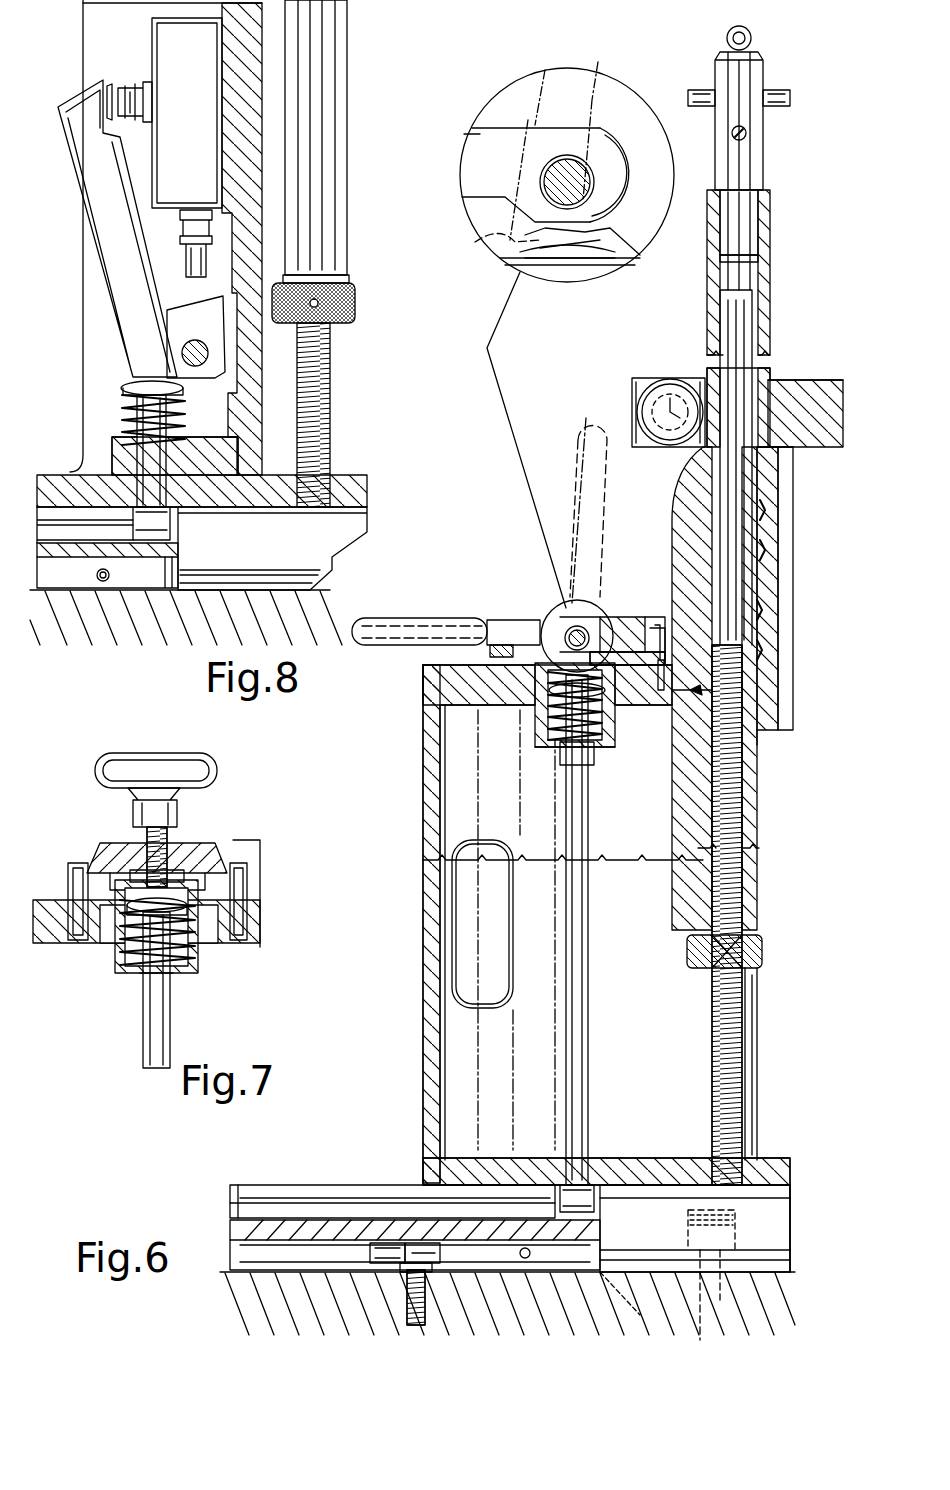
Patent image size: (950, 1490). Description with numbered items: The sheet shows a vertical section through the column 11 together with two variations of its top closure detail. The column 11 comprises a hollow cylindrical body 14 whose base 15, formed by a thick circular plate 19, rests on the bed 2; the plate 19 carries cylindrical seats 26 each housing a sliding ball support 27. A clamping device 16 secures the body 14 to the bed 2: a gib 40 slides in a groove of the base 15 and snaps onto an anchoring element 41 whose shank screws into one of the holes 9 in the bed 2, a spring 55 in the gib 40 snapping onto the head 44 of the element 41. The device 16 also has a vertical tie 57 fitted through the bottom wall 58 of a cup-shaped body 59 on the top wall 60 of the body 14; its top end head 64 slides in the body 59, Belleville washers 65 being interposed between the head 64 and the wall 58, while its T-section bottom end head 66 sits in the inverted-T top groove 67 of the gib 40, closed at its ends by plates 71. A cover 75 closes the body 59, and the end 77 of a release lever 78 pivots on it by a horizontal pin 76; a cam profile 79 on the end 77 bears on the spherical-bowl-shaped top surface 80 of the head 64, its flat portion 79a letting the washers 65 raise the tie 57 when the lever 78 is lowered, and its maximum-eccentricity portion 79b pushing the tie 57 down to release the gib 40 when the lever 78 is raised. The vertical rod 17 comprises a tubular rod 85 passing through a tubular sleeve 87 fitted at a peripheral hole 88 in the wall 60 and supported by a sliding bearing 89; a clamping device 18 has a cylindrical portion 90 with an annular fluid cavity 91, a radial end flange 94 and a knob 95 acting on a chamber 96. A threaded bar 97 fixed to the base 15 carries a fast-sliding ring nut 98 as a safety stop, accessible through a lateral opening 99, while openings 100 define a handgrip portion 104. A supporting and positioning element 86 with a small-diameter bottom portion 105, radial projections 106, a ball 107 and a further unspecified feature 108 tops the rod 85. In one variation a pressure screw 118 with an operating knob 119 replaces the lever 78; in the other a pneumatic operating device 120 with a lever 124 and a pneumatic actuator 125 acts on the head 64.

In FIG. 6, the bed 2 is at (765, 1310).
In FIG. 6, the holes 9 is at (416, 1325).
In FIG. 6, the column 11 is at (492, 568).
In FIG. 6, the hollow cylindrical body 14 is at (415, 915).
In FIG. 8, the base 15 is at (375, 500).
In FIG. 6, the base 15 is at (800, 1205).
In FIG. 6, the clamping device 16 is at (610, 1300).
In FIG. 6, the vertical rod 17 is at (790, 282).
In FIG. 6, the clamping device (radially-expanding bush) 18 is at (830, 378).
In FIG. 6, the circular plate 19 is at (470, 1168).
In FIG. 6, the cylindrical seats 26 is at (714, 1275).
In FIG. 6, the ball support 27 is at (700, 1238).
In FIG. 8, the gib 40 is at (70, 590).
In FIG. 6, the gib 40 is at (235, 1238).
In FIG. 6, the anchoring element 41 is at (428, 1292).
In FIG. 6, the head 44 is at (413, 1240).
In FIG. 6, the spring 55 is at (395, 1240).
In FIG. 8, the vertical tie 57 is at (150, 462).
In FIG. 7, the vertical tie 57 is at (152, 1043).
In FIG. 6, the vertical tie 57 is at (580, 845).
In FIG. 7, the bottom wall 58 is at (133, 975).
In FIG. 6, the bottom wall 58 is at (552, 748).
In FIG. 7, the cup-shaped body 59 is at (195, 985).
In FIG. 6, the cup-shaped body 59 is at (538, 750).
In FIG. 7, the top wall 60 is at (62, 935).
In FIG. 6, the top wall 60 is at (472, 706).
In FIG. 8, the top end head 64 is at (135, 382).
In FIG. 7, the top end head 64 is at (197, 965).
In FIG. 6, the top end head 64 is at (560, 710).
In FIG. 8, the Belleville washers 65 is at (124, 420).
In FIG. 7, the Belleville washers 65 is at (115, 970).
In FIG. 6, the Belleville washers 65 is at (610, 748).
In FIG. 6, the bottom end head 66 is at (595, 1165).
In FIG. 6, the top groove 67 is at (318, 1195).
In FIG. 6, the plates 71 is at (238, 1205).
In FIG. 7, the cover 75 is at (122, 855).
In FIG. 6, the cover 75 is at (625, 620).
In FIG. 6, the horizontal pin 76 is at (552, 630).
In FIG. 6, the end of lever 77 is at (572, 625).
In FIG. 6, the lever 78 is at (480, 615).
In FIG. 6, the cam profile 79 is at (605, 630).
In FIG. 6, the flat portion 79a is at (590, 248).
In FIG. 6, the maximum-eccentricity portion 79b is at (628, 180).
In FIG. 6, the spherical-bowl-shaped top surface 80 is at (515, 242).
In FIG. 8, the tubular rod 85 is at (315, 230).
In FIG. 6, the tubular rod 85 is at (760, 318).
In FIG. 6, the supporting and positioning element 86 is at (750, 175).
In FIG. 6, the tubular sleeve 87 is at (790, 575).
In FIG. 6, the peripheral hole 88 is at (700, 690).
In FIG. 6, the sliding bearing 89 is at (790, 638).
In FIG. 6, the cylindrical portion 90 is at (785, 520).
In FIG. 6, the annular cavity 91 is at (770, 532).
In FIG. 6, the radial end flange 94 is at (805, 435).
In FIG. 6, the knob 95 is at (665, 447).
In FIG. 6, the chamber 96 is at (668, 392).
In FIG. 8, the threaded bar 97 is at (318, 430).
In FIG. 6, the threaded bar 97 is at (745, 822).
In FIG. 8, the fast-sliding ring nut 98 is at (340, 306).
In FIG. 6, the fast-sliding ring nut 98 is at (765, 955).
In FIG. 6, the lateral opening 99 is at (760, 1100).
In FIG. 6, the lateral openings 100 is at (470, 935).
In FIG. 6, the lateral portion 104 is at (440, 890).
In FIG. 6, the small-diameter bottom portion 105 is at (745, 240).
In FIG. 6, the radial projections 106 is at (705, 95).
In FIG. 6, the ball 107 is at (750, 44).
In FIG. 6, the bore 108 is at (750, 130).
In FIG. 7, the pressure screw 118 is at (152, 800).
In FIG. 7, the operating knob 119 is at (170, 770).
In FIG. 8, the pneumatic operating device 120 is at (120, 78).
In FIG. 8, the lever 124 is at (110, 204).
In FIG. 8, the pneumatic actuator 125 is at (165, 55).